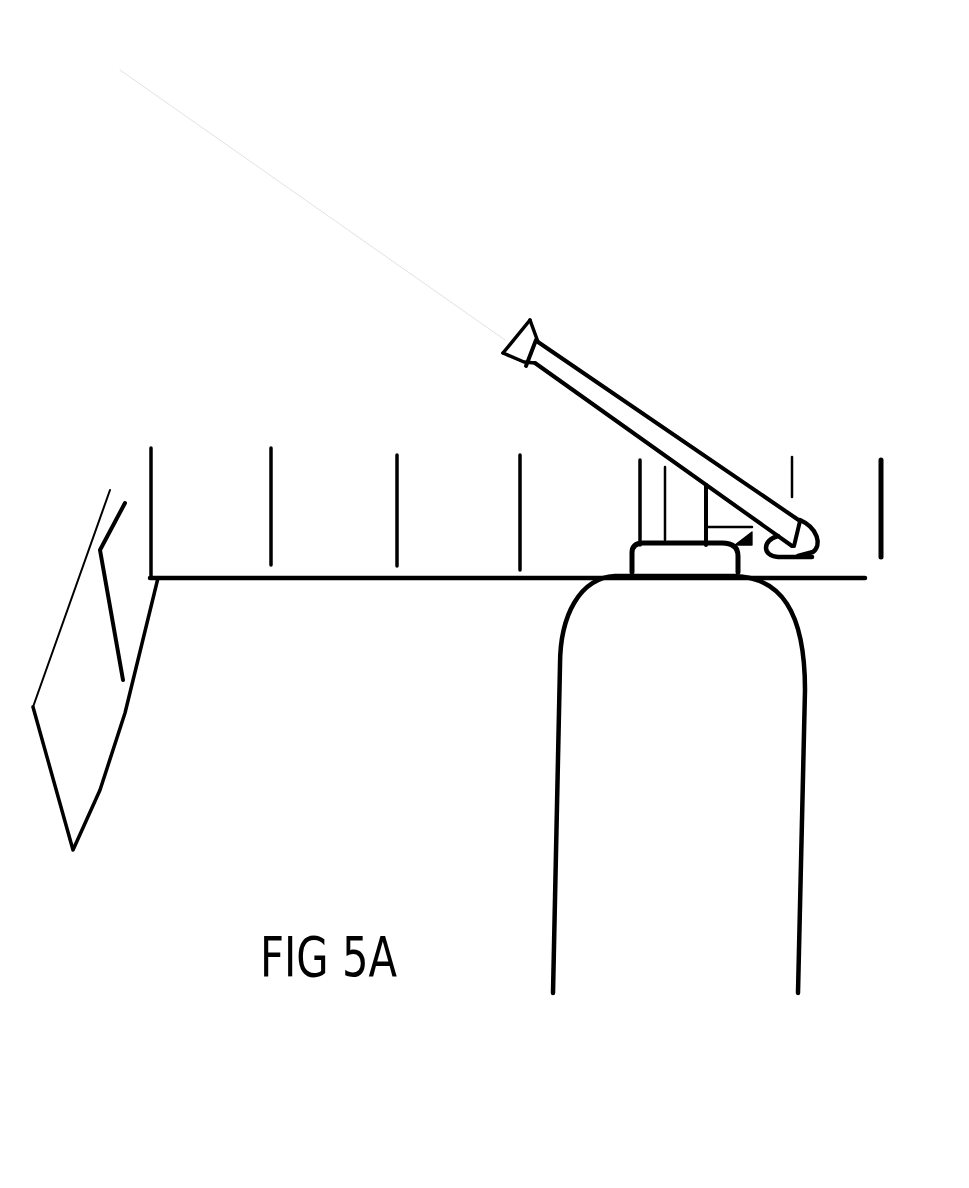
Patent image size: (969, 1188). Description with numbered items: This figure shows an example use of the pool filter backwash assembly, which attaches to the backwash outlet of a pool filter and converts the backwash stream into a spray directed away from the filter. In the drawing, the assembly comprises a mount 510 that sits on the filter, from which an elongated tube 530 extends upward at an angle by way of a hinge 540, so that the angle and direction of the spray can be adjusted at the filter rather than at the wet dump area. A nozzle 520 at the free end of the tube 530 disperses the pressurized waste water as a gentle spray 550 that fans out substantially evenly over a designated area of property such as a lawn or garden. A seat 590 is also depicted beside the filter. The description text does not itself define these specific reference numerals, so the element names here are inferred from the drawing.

The mount 510 is at (738, 580).
The nozzle 520 is at (542, 316).
The tube 530 is at (683, 425).
The hinge 540 is at (805, 557).
The spray 550 is at (260, 230).
The seat 590 is at (763, 829).